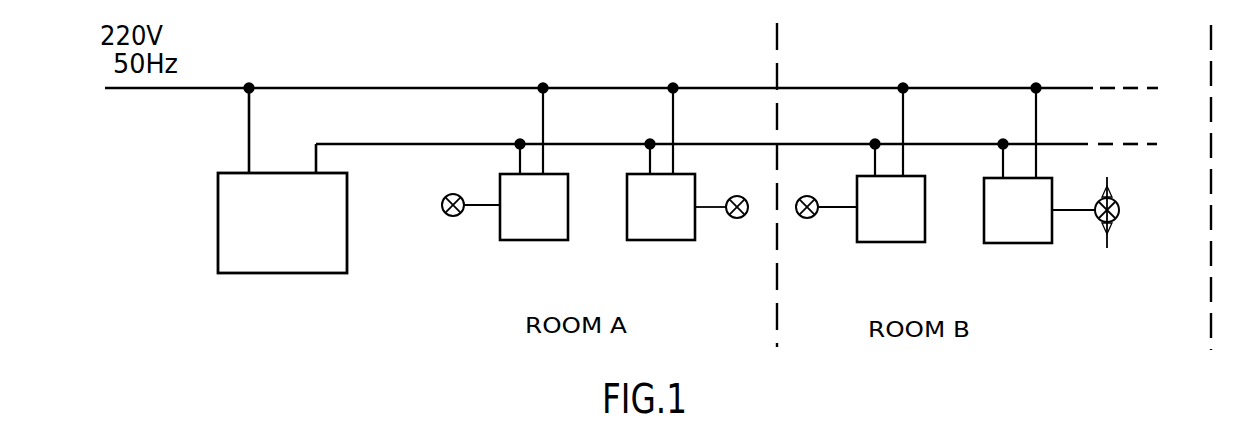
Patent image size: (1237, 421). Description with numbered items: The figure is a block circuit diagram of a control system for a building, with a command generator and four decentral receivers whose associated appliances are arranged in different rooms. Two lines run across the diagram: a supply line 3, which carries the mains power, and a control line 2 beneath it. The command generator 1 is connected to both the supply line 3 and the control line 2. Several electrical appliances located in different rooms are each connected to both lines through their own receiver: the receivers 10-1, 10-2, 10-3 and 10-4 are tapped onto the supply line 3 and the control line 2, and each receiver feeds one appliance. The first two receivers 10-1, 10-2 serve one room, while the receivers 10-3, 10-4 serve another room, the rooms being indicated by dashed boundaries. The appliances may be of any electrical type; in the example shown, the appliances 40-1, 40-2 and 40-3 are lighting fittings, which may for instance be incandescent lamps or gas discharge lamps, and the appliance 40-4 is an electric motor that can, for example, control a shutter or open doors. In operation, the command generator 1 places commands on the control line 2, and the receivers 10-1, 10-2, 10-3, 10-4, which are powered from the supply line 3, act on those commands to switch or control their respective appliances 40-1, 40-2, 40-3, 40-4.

The command generator 1 is at (227, 236).
The control line 2 is at (224, 82).
The supply line 3 is at (286, 84).
The receiver 10-1 is at (517, 228).
The receiver 10-2 is at (642, 228).
The receiver 10-3 is at (868, 233).
The receiver 10-4 is at (995, 235).
The lighting fitting 40-1 is at (465, 219).
The lighting fitting 40-2 is at (728, 222).
The lighting fitting 40-3 is at (819, 222).
The electric motor 40-4 is at (1114, 215).